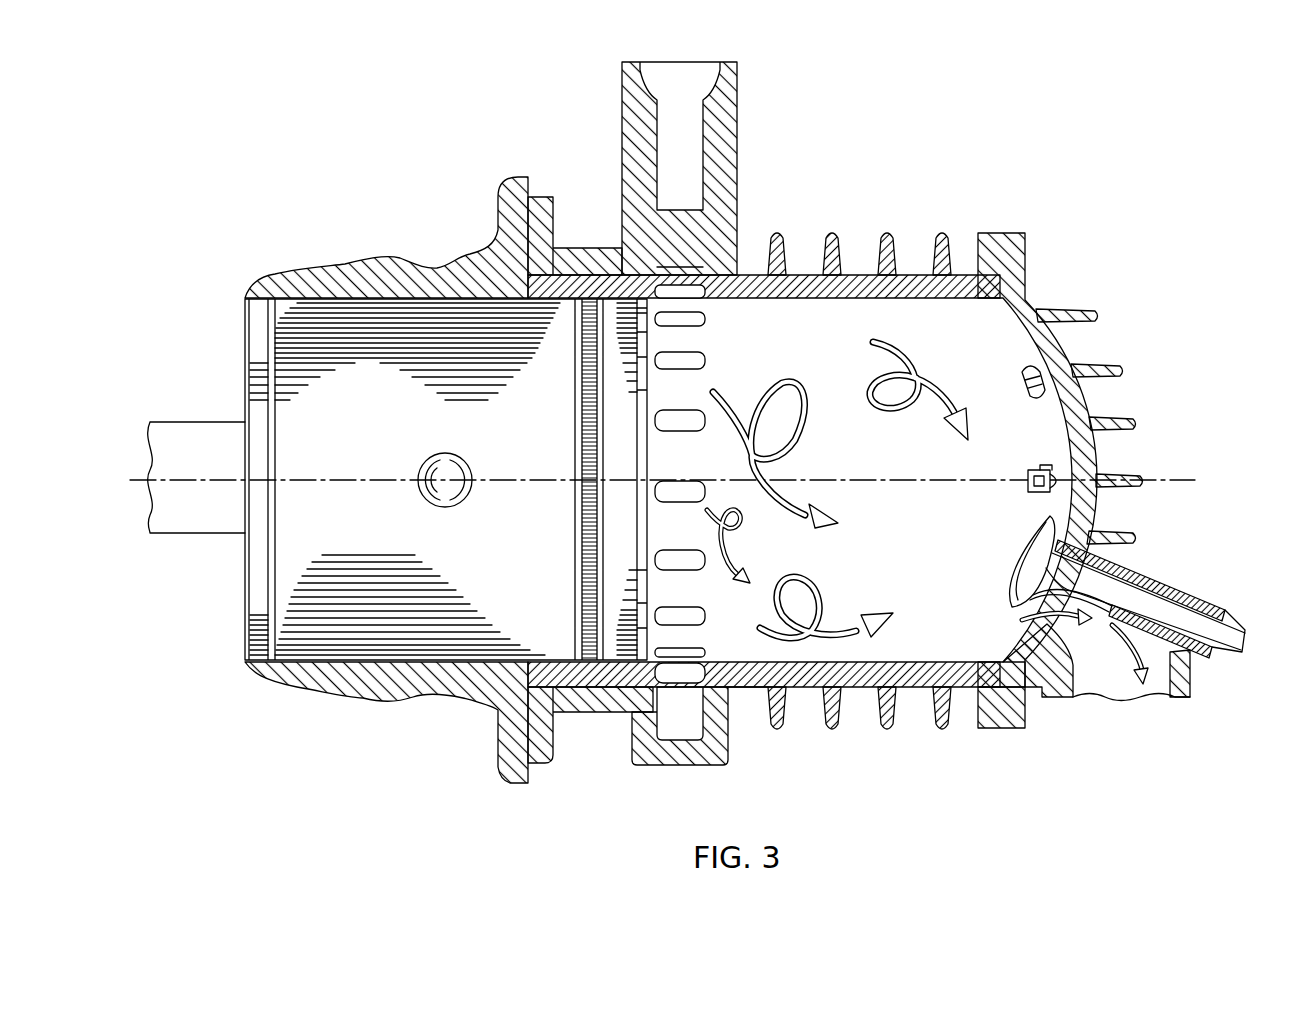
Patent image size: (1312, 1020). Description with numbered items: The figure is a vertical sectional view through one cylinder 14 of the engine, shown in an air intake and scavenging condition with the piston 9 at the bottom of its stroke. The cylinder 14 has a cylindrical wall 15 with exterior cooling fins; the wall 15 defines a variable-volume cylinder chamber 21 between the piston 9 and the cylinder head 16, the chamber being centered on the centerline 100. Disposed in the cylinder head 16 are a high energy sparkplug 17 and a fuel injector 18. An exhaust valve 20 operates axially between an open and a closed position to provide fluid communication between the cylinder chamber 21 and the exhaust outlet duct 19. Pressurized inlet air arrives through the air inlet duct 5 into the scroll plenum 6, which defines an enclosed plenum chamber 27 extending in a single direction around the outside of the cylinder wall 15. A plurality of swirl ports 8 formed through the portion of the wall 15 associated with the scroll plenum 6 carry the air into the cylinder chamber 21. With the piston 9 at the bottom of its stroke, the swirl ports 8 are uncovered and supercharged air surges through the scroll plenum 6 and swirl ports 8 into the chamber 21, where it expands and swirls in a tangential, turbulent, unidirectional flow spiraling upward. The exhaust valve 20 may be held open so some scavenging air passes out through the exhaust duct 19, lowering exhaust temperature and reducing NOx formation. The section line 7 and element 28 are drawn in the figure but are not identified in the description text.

The air inlet duct 5 is at (737, 130).
The scroll plenum 6 is at (728, 720).
The section line 7- 7 is at (688, 805).
The swirl ports 8 is at (655, 360).
The piston 9 is at (395, 390).
The cylinder 14 is at (1053, 123).
The cylindrical wall 15 is at (905, 670).
The cylinder head 16 is at (1065, 358).
The high energy sparkplug 17 is at (1060, 478).
The fuel injector 18 is at (1030, 372).
The exhaust outlet duct 19 is at (1035, 568).
The exhaust valve 20 is at (1125, 588).
The cylinder chamber 21 is at (930, 325).
The plenum chamber 27 is at (692, 720).
The crankcase 28 is at (657, 716).
The centerline 100 is at (897, 482).